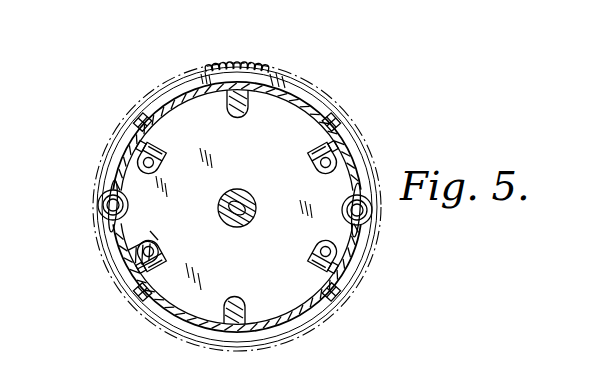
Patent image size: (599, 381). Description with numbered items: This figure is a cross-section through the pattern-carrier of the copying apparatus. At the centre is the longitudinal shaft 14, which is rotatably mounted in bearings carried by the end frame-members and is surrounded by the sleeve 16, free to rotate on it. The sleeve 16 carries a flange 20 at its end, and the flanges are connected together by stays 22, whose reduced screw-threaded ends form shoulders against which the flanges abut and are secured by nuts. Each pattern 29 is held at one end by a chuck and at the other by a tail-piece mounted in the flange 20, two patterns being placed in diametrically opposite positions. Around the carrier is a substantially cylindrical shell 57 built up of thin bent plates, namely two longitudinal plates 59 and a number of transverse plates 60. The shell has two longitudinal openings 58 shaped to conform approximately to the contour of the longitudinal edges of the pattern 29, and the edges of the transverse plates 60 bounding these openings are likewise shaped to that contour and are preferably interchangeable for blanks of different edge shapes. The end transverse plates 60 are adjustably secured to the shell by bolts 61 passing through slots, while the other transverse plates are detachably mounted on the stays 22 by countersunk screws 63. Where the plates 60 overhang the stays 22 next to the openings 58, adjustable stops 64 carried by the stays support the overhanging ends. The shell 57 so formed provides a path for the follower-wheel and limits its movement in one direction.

The shaft 14 is at (287, 244).
The sleeve 16 is at (236, 192).
The flange 20 is at (243, 63).
The stay 22 is at (250, 108).
The pattern 29 is at (364, 232).
The cylindrical shell 57 is at (247, 318).
The longitudinal opening 58 is at (360, 183).
The longitudinal plate 59 is at (282, 73).
The transverse plate 60 is at (323, 110).
The bolt 61 is at (140, 117).
The countersunk screw 63 is at (138, 148).
The adjustable stop 64 is at (207, 217).